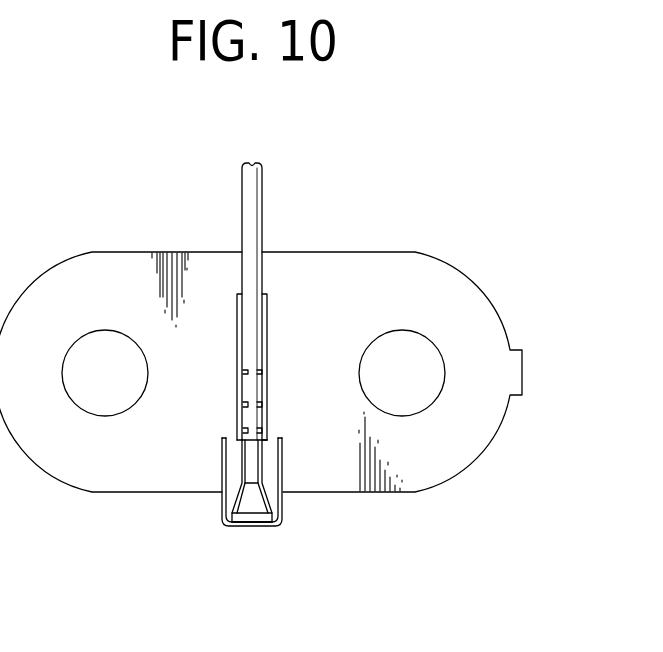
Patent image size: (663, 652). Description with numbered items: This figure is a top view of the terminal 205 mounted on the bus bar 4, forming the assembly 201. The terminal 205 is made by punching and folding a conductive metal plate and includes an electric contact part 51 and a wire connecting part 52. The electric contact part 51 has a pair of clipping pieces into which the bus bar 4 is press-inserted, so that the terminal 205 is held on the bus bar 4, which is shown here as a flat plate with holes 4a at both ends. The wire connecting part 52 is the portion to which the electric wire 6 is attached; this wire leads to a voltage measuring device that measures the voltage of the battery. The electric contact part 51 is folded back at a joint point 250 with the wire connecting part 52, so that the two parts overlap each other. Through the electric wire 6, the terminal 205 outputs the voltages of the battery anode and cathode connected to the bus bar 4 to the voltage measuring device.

The terminal assembly 201 is at (469, 172).
The bus bar 4 is at (350, 287).
The through hole 4a is at (97, 333).
The electric wire 6 is at (255, 183).
The terminal 205 is at (268, 310).
The wire connecting part 52 is at (268, 368).
The electric contact part 51 is at (285, 462).
The joint point 250 is at (252, 522).